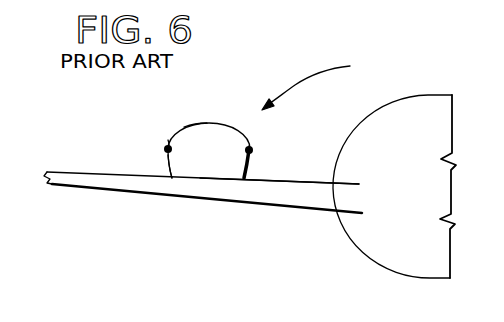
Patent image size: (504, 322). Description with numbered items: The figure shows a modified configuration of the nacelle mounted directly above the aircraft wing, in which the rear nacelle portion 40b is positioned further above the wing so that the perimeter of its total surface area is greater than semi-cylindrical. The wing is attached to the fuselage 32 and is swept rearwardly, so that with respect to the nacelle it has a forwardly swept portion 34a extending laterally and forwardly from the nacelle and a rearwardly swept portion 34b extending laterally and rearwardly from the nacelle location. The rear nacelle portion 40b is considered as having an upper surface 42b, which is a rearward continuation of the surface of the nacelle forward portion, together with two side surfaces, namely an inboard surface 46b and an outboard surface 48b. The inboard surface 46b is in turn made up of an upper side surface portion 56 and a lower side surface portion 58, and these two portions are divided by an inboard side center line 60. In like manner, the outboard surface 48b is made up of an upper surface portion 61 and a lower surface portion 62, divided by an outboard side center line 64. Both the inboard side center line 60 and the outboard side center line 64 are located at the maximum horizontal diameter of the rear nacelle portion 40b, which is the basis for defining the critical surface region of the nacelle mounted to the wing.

The fuselage 32 is at (430, 113).
The forwardly swept portion 34a is at (320, 199).
The rearwardly swept portion 34b is at (78, 186).
The rear nacelle portion 40b is at (327, 85).
The upper surface 42b is at (228, 123).
The inboard surface 46b is at (252, 149).
The outboard surface 48b is at (170, 136).
The upper side surface portion 56 is at (251, 148).
The lower side surface portion 58 is at (250, 173).
The inboard side center line 60 is at (252, 150).
The upper surface portion 61 is at (184, 127).
The lower surface portion 62 is at (168, 162).
The outboard side center line 64 is at (165, 148).